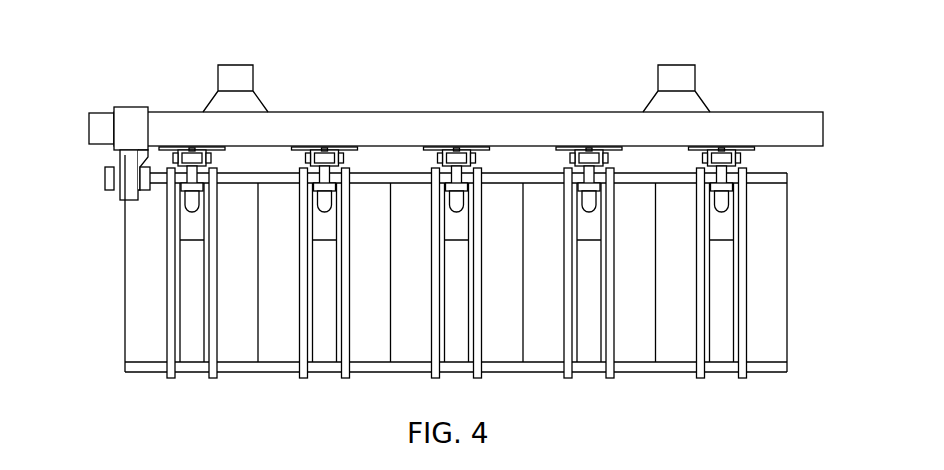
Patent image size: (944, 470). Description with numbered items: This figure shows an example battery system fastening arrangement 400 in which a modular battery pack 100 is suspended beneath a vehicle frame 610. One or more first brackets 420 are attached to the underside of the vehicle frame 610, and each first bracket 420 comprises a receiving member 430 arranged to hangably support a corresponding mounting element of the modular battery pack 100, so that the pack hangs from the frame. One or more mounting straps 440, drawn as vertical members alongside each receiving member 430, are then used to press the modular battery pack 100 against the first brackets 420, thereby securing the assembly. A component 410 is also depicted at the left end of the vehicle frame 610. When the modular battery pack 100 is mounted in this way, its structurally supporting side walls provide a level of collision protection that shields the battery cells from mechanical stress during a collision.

The modular battery pack 100 is at (150, 292).
The battery system fastening arrangement 400 is at (130, 45).
The clamp unit 410 is at (105, 178).
The first bracket 420 is at (747, 149).
The receiving member 430 is at (732, 175).
The mounting strap 440 is at (327, 347).
The vehicle frame 610 is at (527, 128).